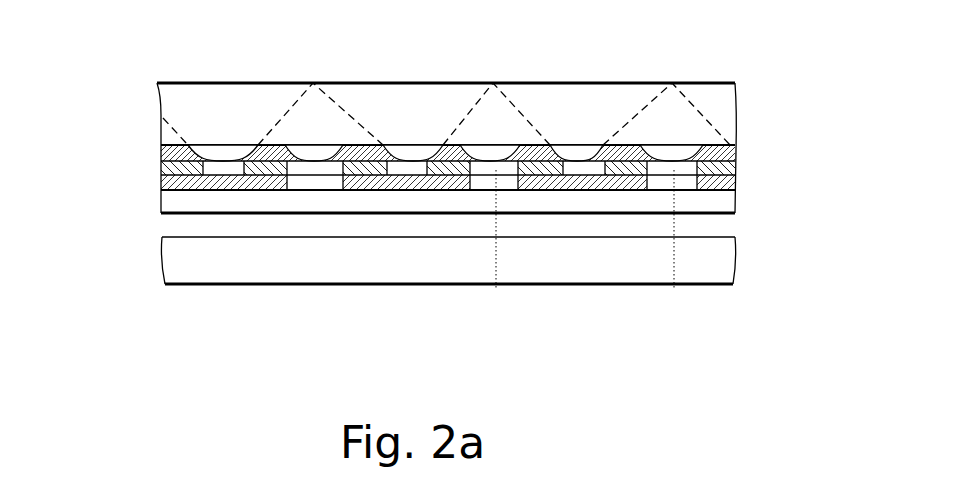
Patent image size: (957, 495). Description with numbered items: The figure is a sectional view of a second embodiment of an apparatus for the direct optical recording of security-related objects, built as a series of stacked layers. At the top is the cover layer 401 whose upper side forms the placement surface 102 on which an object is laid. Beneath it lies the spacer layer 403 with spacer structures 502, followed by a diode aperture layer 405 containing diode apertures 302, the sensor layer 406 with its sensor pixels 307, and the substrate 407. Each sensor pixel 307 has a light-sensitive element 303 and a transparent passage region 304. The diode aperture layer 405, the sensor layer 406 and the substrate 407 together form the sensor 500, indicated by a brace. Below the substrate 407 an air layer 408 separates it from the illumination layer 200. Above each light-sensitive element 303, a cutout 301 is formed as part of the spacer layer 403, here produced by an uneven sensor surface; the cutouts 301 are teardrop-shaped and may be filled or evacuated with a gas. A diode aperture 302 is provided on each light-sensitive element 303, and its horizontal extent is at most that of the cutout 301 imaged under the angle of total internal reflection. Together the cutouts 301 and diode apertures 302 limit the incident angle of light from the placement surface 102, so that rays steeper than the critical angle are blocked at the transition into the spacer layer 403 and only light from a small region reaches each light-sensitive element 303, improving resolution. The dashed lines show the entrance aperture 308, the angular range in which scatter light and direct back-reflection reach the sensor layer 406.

The placement surface 102 is at (723, 82).
The illumination layer 200 is at (705, 260).
The cutout 301 is at (583, 150).
The diode aperture 302 is at (343, 176).
The light-sensitive element 303 is at (398, 183).
The transparent passage region 304 is at (315, 182).
The sensor pixel 307 is at (674, 290).
The entrance aperture 308 is at (340, 110).
The cover layer 401 is at (707, 113).
The spacer layer 403 is at (490, 231).
The diode aperture layer 405 is at (733, 163).
The sensor layer 406 is at (487, 266).
The substrate 407 is at (705, 202).
The air layer 408 is at (705, 225).
The sensor 500 is at (820, 232).
The spacer structure 502 is at (177, 155).